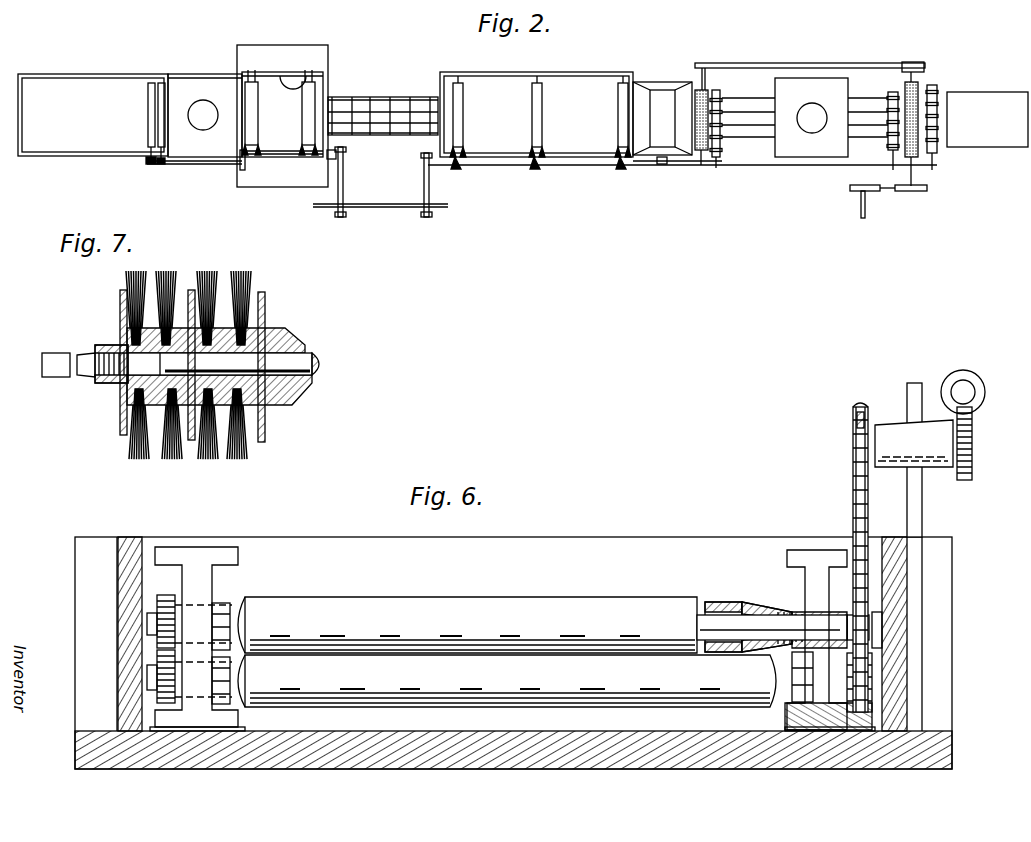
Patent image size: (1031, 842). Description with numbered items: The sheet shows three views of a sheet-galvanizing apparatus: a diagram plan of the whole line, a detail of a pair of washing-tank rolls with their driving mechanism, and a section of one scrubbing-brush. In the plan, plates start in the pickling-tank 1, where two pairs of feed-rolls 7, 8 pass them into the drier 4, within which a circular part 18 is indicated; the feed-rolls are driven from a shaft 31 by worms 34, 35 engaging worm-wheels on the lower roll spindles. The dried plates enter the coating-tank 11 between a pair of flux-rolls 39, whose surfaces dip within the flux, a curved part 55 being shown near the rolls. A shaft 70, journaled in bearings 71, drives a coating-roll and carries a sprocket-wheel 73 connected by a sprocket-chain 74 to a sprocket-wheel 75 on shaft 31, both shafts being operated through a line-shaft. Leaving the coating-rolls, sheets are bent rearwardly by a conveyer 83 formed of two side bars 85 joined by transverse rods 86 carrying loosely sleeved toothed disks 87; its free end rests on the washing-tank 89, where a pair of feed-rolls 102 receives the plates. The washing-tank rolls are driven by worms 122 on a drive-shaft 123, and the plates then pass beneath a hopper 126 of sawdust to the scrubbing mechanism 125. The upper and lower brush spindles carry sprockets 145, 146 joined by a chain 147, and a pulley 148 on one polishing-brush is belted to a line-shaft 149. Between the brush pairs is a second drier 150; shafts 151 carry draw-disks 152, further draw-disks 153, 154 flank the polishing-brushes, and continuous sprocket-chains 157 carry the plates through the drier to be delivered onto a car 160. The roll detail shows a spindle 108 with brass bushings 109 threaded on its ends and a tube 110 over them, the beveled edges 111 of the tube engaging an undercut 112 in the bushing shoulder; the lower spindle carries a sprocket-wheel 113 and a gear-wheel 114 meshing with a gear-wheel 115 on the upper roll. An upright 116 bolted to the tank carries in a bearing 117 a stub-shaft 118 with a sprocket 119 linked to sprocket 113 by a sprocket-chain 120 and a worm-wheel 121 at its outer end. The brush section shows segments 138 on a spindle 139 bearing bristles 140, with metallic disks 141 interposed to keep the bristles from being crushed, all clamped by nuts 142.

In FIG. 2, the pickling-tank 1 is at (93, 115).
In FIG. 2, the drier 4 is at (205, 115).
In FIG. 2, the feed-rolls 7 is at (148, 106).
In FIG. 2, the feed-rolls 8 is at (165, 96).
In FIG. 2, the coating-tank 11 is at (282, 116).
In FIG. 2, the drum 18 is at (203, 115).
In FIG. 2, the shaft 31 is at (183, 164).
In FIG. 2, the worm 34 is at (148, 164).
In FIG. 2, the worm 35 is at (161, 165).
In FIG. 2, the flux-rolls 39 is at (258, 90).
In FIG. 2, the guide 55 is at (293, 76).
In FIG. 2, the shaft 70 is at (280, 156).
In FIG. 2, the bearings 71 is at (392, 210).
In FIG. 2, the sprocket-wheel 73 is at (244, 152).
In FIG. 2, the sprocket-chain 74 is at (318, 152).
In FIG. 2, the sprocket-wheel 75 is at (241, 168).
In FIG. 2, the conveyer 83 is at (383, 104).
In FIG. 2, the side bars 85 is at (386, 137).
In FIG. 2, the transverse rods 86 is at (400, 110).
In FIG. 2, the toothed disks 87 is at (342, 108).
In FIG. 2, the washing-tank 89 is at (536, 114).
In FIG. 2, the feed-rolls 102 is at (460, 108).
In FIG. 2, the worms 122 is at (458, 166).
In FIG. 6, the worms 122 is at (948, 382).
In FIG. 2, the drive-shaft 123 is at (566, 166).
In FIG. 6, the drive-shaft 123 is at (963, 392).
In FIG. 2, the scrubbing mechanism 125 is at (662, 166).
In FIG. 2, the hopper 126 is at (659, 100).
In FIG. 2, the sprocket 145 is at (708, 64).
In FIG. 2, the sprocket 146 is at (913, 70).
In FIG. 2, the chain 147 is at (848, 66).
In FIG. 2, the pulley 148 is at (915, 192).
In FIG. 2, the line-shaft 149 is at (862, 200).
In FIG. 2, the drier 150 is at (805, 145).
In FIG. 2, the shafts 151 is at (720, 128).
In FIG. 2, the draw-disks 152 is at (722, 96).
In FIG. 2, the draw-disks 153 is at (893, 92).
In FIG. 2, the draw-disks 154 is at (936, 86).
In FIG. 2, the sprocket-chains 157 is at (766, 98).
In FIG. 2, the car 160 is at (987, 119).
In FIG. 7, the segments 138 is at (222, 320).
In FIG. 7, the spindle 139 is at (310, 366).
In FIG. 7, the bristles 140 is at (255, 290).
In FIG. 7, the disks 141 is at (191, 290).
In FIG. 7, the nuts 142 is at (110, 348).
In FIG. 6, the spindle 108 is at (697, 624).
In FIG. 6, the brass bushings 109 is at (708, 706).
In FIG. 6, the tube 110 is at (467, 625).
In FIG. 6, the beveled edges 111 is at (732, 602).
In FIG. 6, the undercut 112 is at (790, 610).
In FIG. 6, the sprocket-wheel 113 is at (872, 668).
In FIG. 6, the gear-wheel 114 is at (176, 602).
In FIG. 6, the gear-wheel 115 is at (150, 670).
In FIG. 6, the upright 116 is at (922, 612).
In FIG. 6, the bearing 117 is at (897, 430).
In FIG. 6, the stub-shaft 118 is at (874, 437).
In FIG. 6, the sprocket 119 is at (855, 418).
In FIG. 6, the sprocket-chain 120 is at (856, 486).
In FIG. 6, the worm-wheel 121 is at (962, 480).